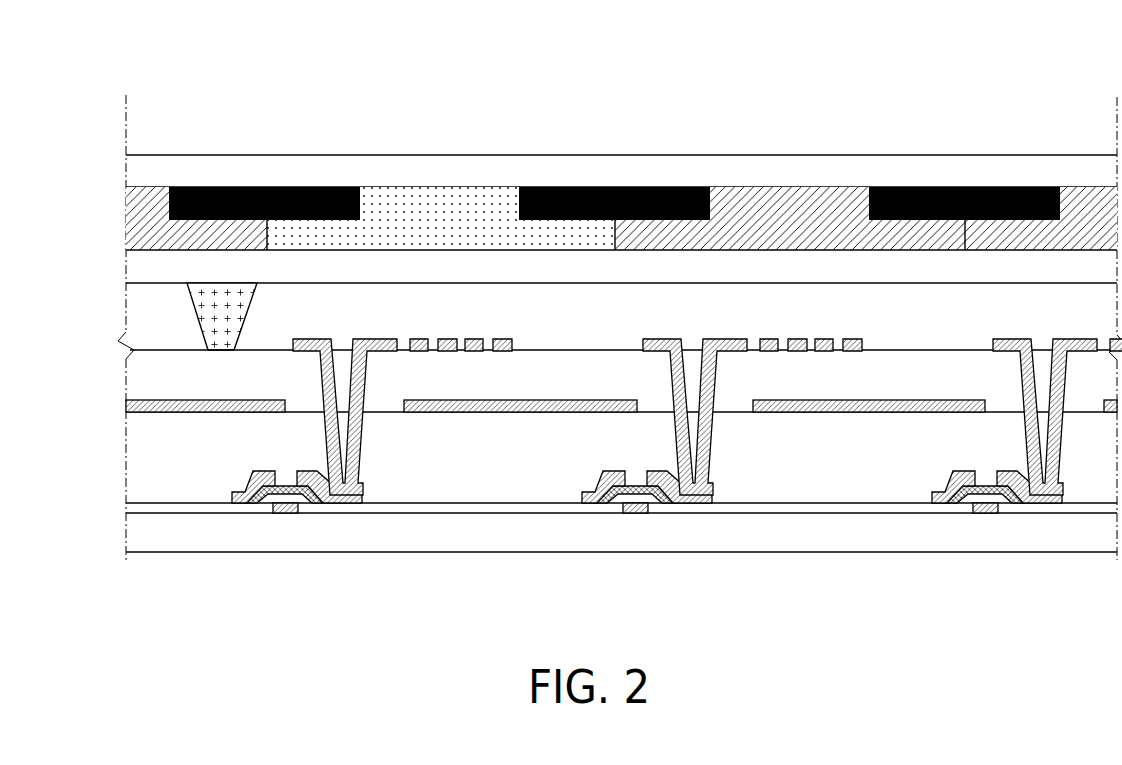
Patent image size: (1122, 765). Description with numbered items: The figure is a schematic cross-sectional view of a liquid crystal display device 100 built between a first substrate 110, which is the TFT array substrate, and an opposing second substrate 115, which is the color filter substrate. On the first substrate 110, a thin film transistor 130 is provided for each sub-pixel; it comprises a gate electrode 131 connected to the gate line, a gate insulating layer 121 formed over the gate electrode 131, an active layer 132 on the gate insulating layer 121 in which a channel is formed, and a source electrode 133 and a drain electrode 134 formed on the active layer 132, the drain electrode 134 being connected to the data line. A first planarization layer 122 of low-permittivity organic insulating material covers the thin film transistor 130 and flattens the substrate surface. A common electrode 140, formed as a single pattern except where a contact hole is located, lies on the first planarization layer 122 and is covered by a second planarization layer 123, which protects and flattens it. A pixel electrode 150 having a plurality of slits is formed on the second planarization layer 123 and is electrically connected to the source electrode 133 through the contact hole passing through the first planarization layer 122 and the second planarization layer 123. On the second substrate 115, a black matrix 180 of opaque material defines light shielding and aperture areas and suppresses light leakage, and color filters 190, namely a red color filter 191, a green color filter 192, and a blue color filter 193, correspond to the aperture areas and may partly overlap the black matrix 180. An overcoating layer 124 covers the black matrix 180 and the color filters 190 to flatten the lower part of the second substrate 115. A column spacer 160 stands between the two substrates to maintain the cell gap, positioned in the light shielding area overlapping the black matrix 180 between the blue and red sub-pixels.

The liquid crystal display device 100 is at (1115, 69).
The first substrate 110 is at (155, 533).
The second substrate 115 is at (150, 168).
The gate insulating layer 121 is at (155, 508).
The first planarization layer 122 is at (155, 461).
The second planarization layer 123 is at (155, 380).
The overcoating layer 124 is at (155, 265).
The thin film transistor 130 is at (357, 588).
The gate electrode 131 is at (287, 513).
The active layer 132 is at (263, 503).
The source electrode 133 is at (337, 503).
The drain electrode 134 is at (235, 503).
The common electrode 140 is at (418, 407).
The pixel electrode 150 is at (474, 351).
The column spacer 160 is at (220, 297).
The black matrix 180 is at (169, 201).
The color filters 190 is at (512, 70).
The red color filter 191 is at (437, 223).
The green color filter 192 is at (725, 233).
The blue color filter 193 is at (250, 237).